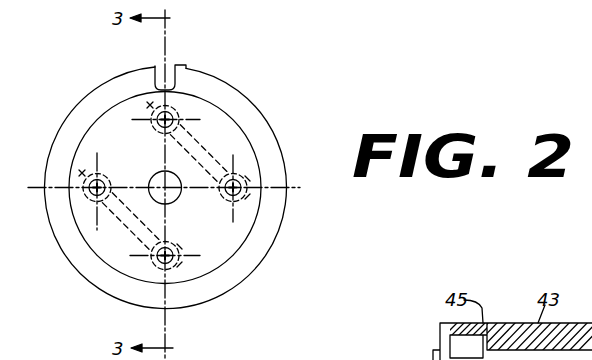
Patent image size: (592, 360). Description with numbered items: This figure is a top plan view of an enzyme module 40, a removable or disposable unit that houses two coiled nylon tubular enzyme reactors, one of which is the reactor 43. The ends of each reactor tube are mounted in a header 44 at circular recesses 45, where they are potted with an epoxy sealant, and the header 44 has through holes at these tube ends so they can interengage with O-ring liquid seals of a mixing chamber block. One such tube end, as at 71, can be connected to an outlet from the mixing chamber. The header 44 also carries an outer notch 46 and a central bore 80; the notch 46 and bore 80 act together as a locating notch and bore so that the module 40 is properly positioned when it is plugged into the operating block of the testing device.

The enzyme module 40 is at (203, 311).
The reactor 43 is at (258, 188).
The header 44 is at (227, 128).
The circular recesses 45 is at (175, 66).
The outer notch 46 is at (155, 68).
The end of reactor tube 71 is at (183, 96).
The bore 80 is at (154, 176).